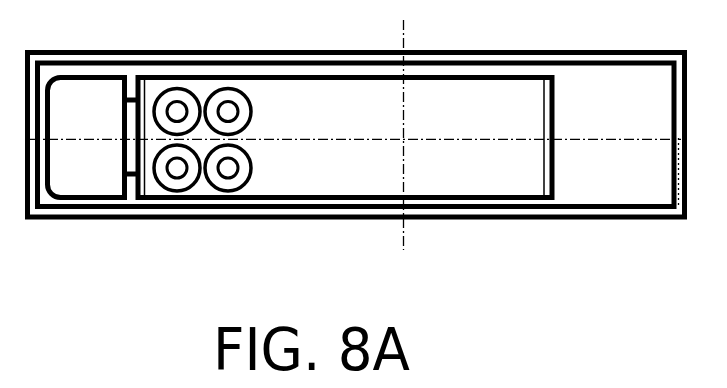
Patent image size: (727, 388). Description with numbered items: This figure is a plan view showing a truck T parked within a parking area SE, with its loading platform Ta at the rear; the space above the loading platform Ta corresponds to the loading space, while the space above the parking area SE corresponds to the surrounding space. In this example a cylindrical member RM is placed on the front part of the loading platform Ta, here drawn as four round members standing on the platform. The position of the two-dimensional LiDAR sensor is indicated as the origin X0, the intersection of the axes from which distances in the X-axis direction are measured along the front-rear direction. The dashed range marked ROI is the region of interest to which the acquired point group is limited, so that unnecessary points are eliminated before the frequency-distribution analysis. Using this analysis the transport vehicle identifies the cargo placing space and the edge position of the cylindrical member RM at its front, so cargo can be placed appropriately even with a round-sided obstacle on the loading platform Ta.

The parking area SE is at (630, 116).
The ROI (Region of Interest) ROI is at (637, 185).
The origin X0 is at (405, 151).
The truck T is at (92, 172).
The loading platform Ta is at (363, 122).
The cylindrical member RM is at (188, 172).